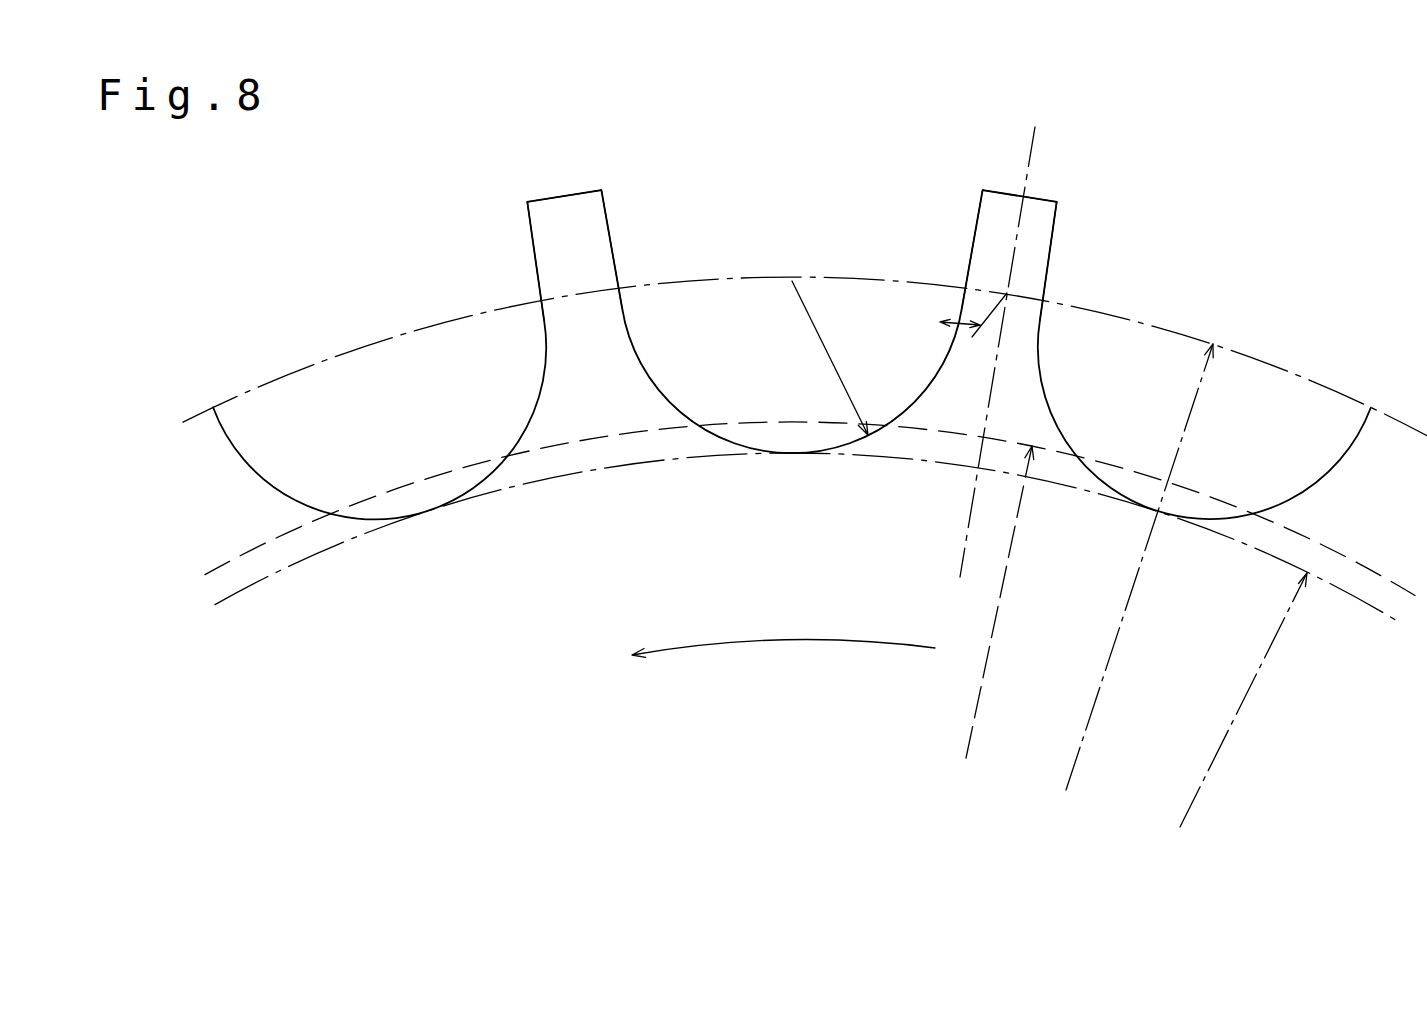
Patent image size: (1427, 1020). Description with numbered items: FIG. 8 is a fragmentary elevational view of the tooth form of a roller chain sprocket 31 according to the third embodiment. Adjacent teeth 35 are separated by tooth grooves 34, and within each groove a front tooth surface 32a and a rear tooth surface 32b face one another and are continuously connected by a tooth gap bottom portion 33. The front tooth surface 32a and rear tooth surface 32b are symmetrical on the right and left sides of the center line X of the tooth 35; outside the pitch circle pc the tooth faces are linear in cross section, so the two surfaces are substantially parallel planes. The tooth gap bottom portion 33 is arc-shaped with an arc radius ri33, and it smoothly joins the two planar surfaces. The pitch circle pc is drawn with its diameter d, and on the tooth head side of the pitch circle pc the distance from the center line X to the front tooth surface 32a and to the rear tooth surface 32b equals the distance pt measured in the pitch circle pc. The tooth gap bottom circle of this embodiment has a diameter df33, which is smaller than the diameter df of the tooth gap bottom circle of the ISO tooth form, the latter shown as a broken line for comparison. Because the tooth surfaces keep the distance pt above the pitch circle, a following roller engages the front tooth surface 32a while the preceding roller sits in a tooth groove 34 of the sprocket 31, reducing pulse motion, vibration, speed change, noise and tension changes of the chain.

The sprocket 31 is at (498, 693).
The front tooth surface 32a is at (532, 233).
The rear tooth surface 32b is at (605, 207).
The tooth gap bottom portion 33 is at (393, 512).
The tooth groove 34 is at (286, 393).
The tooth 35 is at (565, 190).
The pitch circle pc is at (1290, 366).
The distance pt is at (937, 325).
The arc radius of the tooth gap bottom portion ri33 is at (832, 357).
The diameter of the tooth gap bottom circle in the ISO tooth form df is at (988, 616).
The pitch circle diameter d is at (1133, 581).
The diameter of the tooth gap bottom circle df33 is at (1225, 718).
The center line of the tooth X is at (1003, 334).